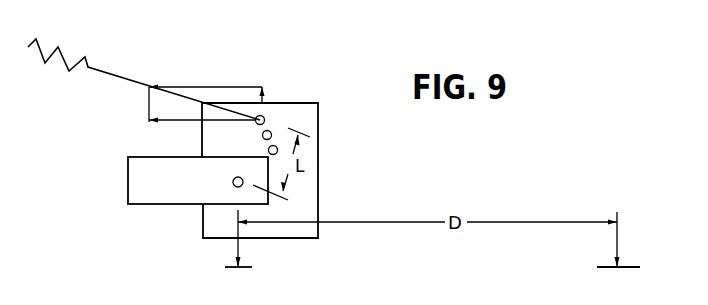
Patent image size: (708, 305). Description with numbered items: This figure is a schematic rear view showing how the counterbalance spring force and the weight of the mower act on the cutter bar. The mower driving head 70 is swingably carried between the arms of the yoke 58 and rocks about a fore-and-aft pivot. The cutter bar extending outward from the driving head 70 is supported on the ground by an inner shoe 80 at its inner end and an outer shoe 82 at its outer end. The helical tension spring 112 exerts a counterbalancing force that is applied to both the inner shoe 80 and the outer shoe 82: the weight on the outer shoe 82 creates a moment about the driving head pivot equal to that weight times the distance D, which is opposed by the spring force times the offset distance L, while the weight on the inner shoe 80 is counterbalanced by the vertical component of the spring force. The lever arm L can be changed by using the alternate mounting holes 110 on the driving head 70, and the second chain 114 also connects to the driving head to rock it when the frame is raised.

The helical tension spring 112 is at (54, 50).
The alternate mounting holes 110 is at (268, 148).
The second chain 114 is at (232, 182).
The mower driving head 70 is at (313, 163).
The yoke 58 is at (152, 201).
The inner shoe 80 is at (240, 250).
The outer shoe 82 is at (620, 250).